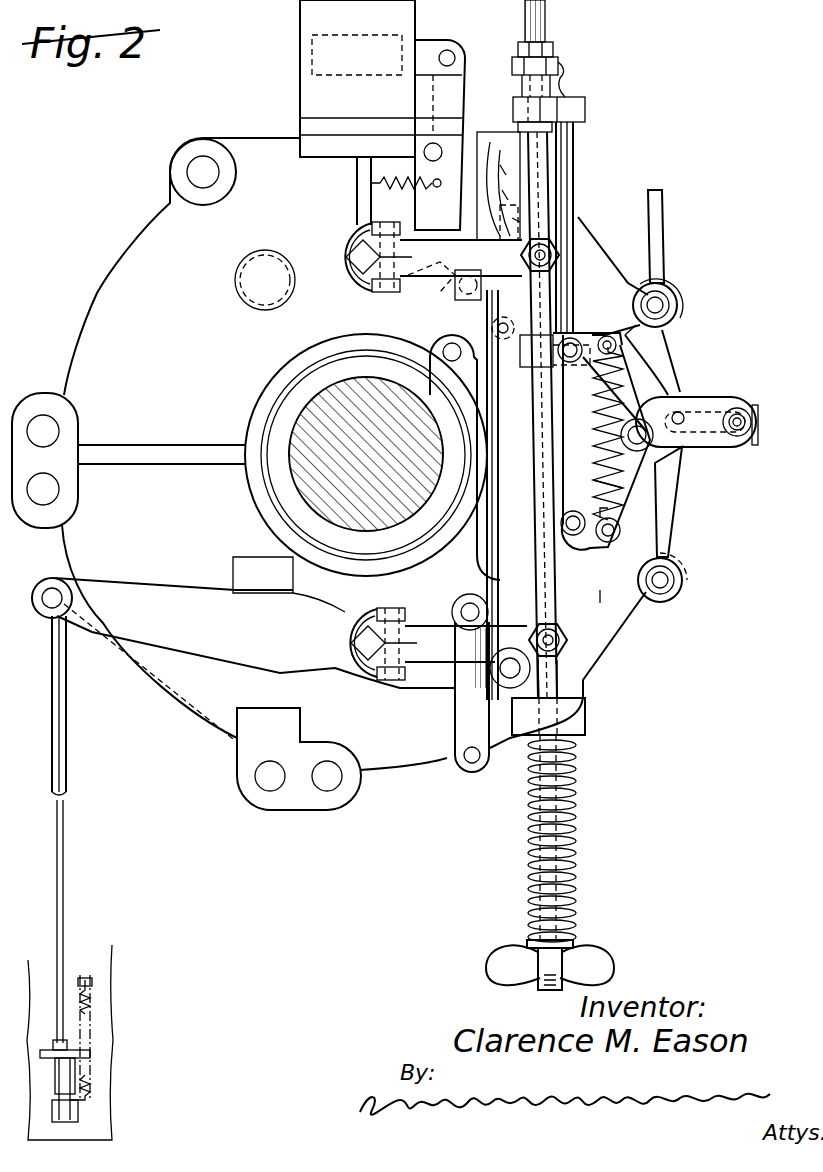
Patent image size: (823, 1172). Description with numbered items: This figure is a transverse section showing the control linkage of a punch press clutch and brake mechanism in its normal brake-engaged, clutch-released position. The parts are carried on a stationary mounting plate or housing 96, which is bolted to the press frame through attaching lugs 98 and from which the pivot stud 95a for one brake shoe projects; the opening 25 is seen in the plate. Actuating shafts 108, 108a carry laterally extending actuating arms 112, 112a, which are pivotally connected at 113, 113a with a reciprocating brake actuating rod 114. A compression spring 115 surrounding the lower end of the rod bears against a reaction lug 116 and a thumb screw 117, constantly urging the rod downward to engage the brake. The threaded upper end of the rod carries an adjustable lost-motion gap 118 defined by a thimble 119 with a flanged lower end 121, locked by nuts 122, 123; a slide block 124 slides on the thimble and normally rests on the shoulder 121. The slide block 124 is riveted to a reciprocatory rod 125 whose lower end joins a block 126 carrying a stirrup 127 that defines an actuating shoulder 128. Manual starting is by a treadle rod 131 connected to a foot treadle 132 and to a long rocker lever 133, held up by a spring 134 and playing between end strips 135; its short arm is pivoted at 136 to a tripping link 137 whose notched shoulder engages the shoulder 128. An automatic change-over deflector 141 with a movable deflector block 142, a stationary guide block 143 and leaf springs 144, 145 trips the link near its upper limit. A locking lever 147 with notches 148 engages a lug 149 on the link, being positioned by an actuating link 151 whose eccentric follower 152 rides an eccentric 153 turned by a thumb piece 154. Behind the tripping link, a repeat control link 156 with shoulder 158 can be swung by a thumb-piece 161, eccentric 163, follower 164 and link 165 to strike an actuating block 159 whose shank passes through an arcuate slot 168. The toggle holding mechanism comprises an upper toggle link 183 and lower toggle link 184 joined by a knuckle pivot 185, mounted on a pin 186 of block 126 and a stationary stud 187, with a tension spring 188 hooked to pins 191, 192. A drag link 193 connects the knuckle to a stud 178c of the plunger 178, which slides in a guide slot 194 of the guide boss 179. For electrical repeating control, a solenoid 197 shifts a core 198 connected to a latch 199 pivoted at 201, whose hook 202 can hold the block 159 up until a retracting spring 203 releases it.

The mixing chamber bore 25 is at (316, 405).
The stationary pivot stud 95a is at (260, 268).
The stationary mounting plate or housing 96 is at (112, 278).
The attaching lugs 98 is at (30, 392).
The actuating shaft 108 is at (360, 254).
The actuating shaft 108a is at (363, 645).
The actuating arm 112 is at (386, 296).
The actuating arm 112a is at (436, 665).
The pivotal connection 113 is at (550, 254).
The pivotal connection 113a is at (568, 640).
The brake actuating rod 114 is at (558, 690).
The compression spring 115 is at (578, 830).
The reaction lug 116 is at (586, 732).
The thumb screw 117 is at (593, 956).
The adjustable lost-motion gap 118 is at (566, 92).
The thimble or sleeve 119 is at (521, 89).
The flanged lower end 121 is at (518, 127).
The nut 122 is at (512, 64).
The nut 123 is at (550, 45).
The slide block 124 is at (586, 108).
The reciprocatory rod 125 is at (574, 136).
The block 126 is at (636, 296).
The stirrup portion 127 is at (522, 360).
The actuating shoulder 128 is at (556, 344).
The treadle rod 131 is at (65, 744).
The foot treadle 132 is at (90, 1058).
The rocker lever 133 is at (150, 598).
The spring 134 is at (88, 1016).
The upper end strip 135 is at (256, 592).
The pivot stud 136 is at (557, 662).
The tripping link 137 is at (494, 546).
The automatic change-over deflector 141 is at (506, 196).
The movable deflector block 142 is at (522, 220).
The stationary guide block 143 is at (516, 207).
The leaf spring 144 is at (504, 173).
The leaf spring 145 is at (500, 214).
The locking lever 147 is at (458, 739).
The locking notch 148 is at (466, 700).
The lug 149 is at (510, 690).
The actuating link 151 is at (600, 596).
The eccentric follower portion 152 is at (684, 584).
The eccentric 153 is at (684, 562).
The pivoted thumb piece 154 is at (670, 500).
The repeat control link 156 is at (590, 380).
The actuating shoulder 158 is at (496, 328).
The actuating block 159 is at (460, 300).
The thumb-piece 161 is at (662, 208).
The eccentric 163 is at (680, 305).
The eccentric follower 164 is at (668, 286).
The link 165 is at (668, 338).
The arcuate slot 168 is at (450, 258).
The plunger 178 is at (758, 418).
The stud 178c is at (740, 440).
The guide boss 179 is at (760, 432).
The upper toggle link 183 is at (598, 410).
The lower toggle link 184 is at (603, 474).
The knuckle pivot 185 is at (641, 418).
The pin 186 is at (571, 364).
The stationary pivot stud 187 is at (575, 536).
The tension spring 188 is at (616, 396).
The pin 191 is at (618, 346).
The pin 192 is at (612, 543).
The drag link 193 is at (740, 404).
The guide slot 194 is at (682, 412).
The electrical solenoid 197 is at (313, 12).
The solenoid core 198 is at (427, 42).
The latch 199 is at (462, 84).
The pivot 201 is at (430, 158).
The hook 202 is at (412, 277).
The retracting spring 203 is at (372, 181).